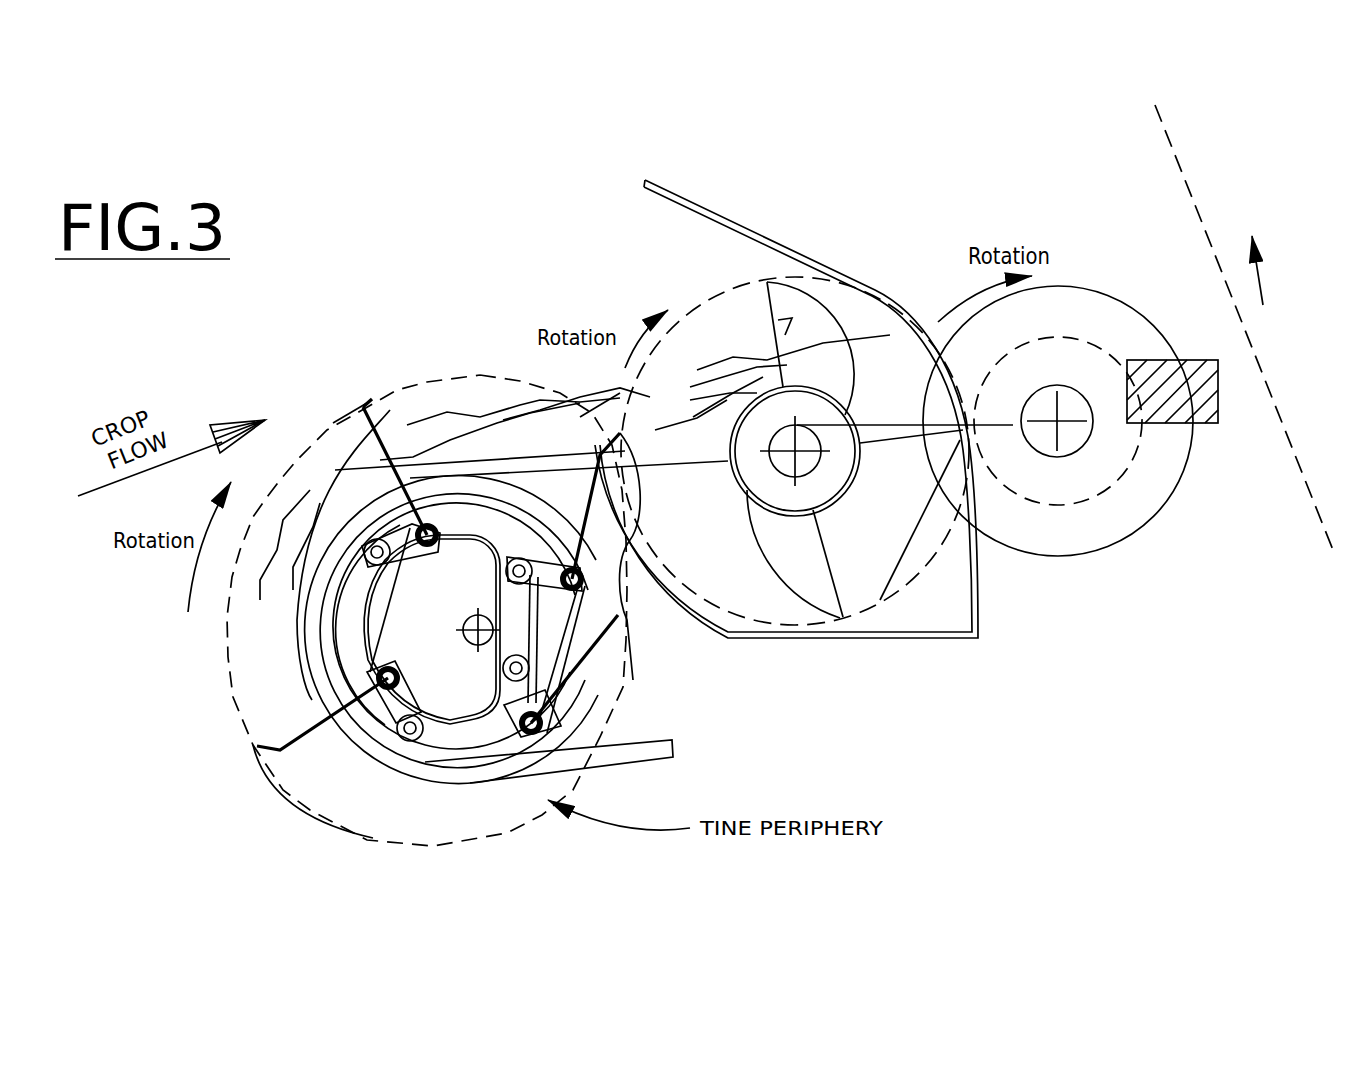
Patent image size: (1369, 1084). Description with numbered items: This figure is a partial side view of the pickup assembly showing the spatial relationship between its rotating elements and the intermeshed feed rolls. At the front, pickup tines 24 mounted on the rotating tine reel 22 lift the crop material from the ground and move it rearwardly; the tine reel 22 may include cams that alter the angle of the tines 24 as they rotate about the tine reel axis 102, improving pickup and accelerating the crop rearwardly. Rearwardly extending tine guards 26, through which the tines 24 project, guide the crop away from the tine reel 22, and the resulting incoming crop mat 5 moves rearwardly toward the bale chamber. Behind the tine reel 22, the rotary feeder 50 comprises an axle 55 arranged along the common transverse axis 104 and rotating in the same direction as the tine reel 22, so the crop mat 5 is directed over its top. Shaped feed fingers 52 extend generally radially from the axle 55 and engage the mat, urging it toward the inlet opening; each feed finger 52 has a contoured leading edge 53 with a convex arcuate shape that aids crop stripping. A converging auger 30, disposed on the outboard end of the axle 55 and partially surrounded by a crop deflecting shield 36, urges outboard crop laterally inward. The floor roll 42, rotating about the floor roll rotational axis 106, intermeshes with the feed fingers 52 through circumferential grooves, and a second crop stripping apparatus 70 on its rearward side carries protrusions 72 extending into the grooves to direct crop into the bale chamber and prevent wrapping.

The incoming crop mat 5 is at (473, 413).
The tine reel 22 is at (245, 806).
The pickup tines 24 is at (390, 410).
The tine guards 26 is at (570, 457).
The converging auger 30 is at (740, 272).
The crop deflecting shield 36 is at (768, 232).
The floor roll 42 is at (1117, 542).
The rotary feeder 50 is at (881, 600).
The feed fingers 52 is at (780, 323).
The contoured leading edge 53 is at (808, 300).
The axle 55 is at (815, 470).
The second crop stripping apparatus 70 is at (1237, 426).
The protrusions 72 is at (1162, 455).
The tine reel axis 102 is at (472, 640).
The common transverse axis 104 is at (800, 447).
The floor roll rotational axis 106 is at (1057, 420).